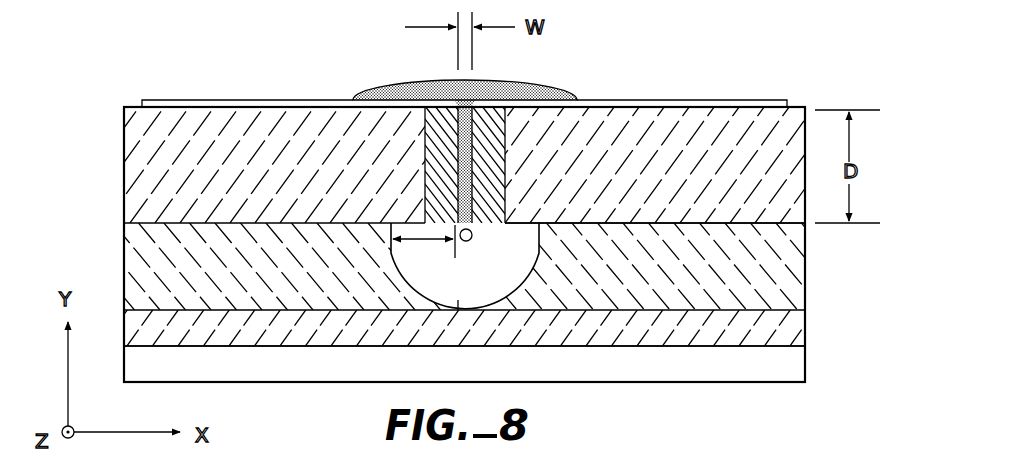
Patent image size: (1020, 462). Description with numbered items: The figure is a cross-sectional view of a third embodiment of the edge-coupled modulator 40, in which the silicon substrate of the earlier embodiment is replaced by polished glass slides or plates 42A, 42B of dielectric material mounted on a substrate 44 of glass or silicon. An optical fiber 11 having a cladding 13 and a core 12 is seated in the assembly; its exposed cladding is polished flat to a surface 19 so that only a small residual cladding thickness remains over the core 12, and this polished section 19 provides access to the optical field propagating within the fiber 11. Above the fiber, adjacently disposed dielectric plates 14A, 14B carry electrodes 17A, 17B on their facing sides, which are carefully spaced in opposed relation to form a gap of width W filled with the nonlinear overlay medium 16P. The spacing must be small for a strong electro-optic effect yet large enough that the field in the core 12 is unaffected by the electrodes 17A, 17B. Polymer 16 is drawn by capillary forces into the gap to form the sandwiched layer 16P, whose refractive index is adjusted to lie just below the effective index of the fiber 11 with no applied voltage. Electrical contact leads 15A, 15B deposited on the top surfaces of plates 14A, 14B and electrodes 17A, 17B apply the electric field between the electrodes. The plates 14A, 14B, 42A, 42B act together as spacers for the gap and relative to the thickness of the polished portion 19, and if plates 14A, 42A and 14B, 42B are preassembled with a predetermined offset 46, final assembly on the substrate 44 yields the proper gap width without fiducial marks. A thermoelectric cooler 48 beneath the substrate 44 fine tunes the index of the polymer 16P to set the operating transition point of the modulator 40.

The optical fiber 11 is at (417, 296).
The core 12 is at (471, 241).
The cladding 13 is at (460, 302).
The dielectric plate 14A is at (130, 165).
The dielectric plate 14B is at (800, 108).
The electrical contact lead 15A is at (300, 100).
The electrical contact lead 15B is at (732, 104).
The polymer 16 is at (456, 108).
The nonlinear overlay medium 16P is at (473, 102).
The electrode 17A is at (432, 125).
The electrode 17B is at (490, 130).
The polished surface 19 is at (527, 222).
The edge-coupled modulator 40 is at (668, 58).
The glass plate 42A is at (130, 241).
The glass plate 42B is at (790, 256).
The substrate 44 is at (248, 338).
The predetermined offset 46 is at (421, 240).
The thermoelectric cooler 48 is at (795, 356).